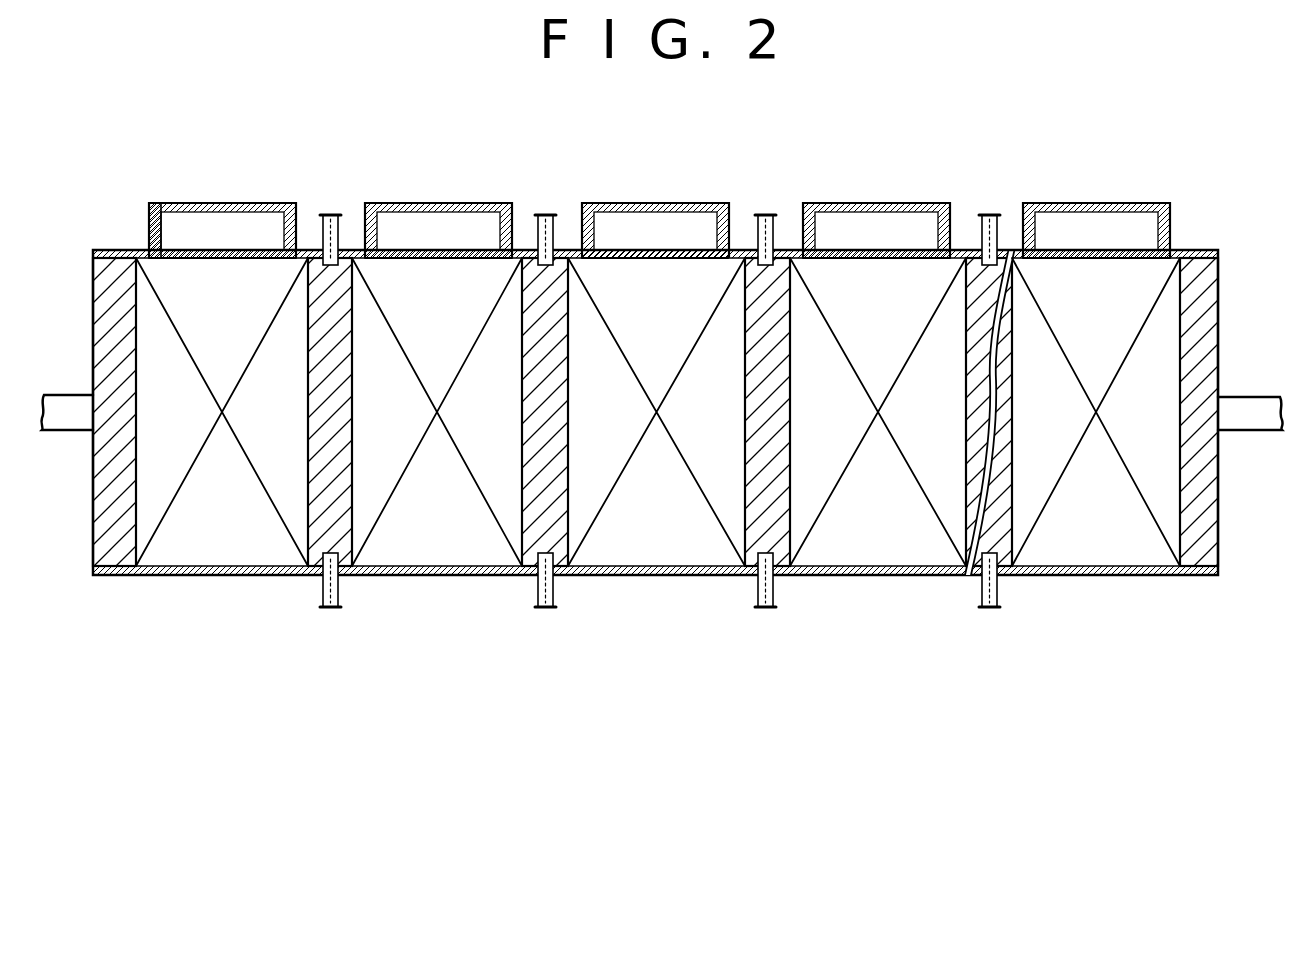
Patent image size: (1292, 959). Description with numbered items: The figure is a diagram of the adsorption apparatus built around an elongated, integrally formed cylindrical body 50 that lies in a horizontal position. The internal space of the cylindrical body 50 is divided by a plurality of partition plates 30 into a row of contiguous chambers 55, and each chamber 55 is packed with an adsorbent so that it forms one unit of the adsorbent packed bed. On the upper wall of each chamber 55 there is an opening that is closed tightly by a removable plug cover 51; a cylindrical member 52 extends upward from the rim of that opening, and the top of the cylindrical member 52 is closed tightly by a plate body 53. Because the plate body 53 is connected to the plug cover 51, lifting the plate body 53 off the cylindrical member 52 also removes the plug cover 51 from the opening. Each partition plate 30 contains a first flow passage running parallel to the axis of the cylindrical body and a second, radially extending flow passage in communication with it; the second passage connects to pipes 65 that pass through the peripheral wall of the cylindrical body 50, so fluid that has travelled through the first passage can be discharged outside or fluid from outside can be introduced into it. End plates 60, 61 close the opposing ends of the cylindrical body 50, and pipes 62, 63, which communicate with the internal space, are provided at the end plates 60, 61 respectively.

The partition plate 30 is at (303, 535).
The cylindrical body 50 is at (900, 577).
The plug cover 51 is at (204, 259).
The cylindrical member 52 is at (151, 228).
The plate body 53 is at (250, 206).
The chamber 55 is at (197, 537).
The end plate 60 is at (1200, 520).
The end plate 61 is at (105, 498).
The pipe 62 is at (1249, 397).
The pipe 63 is at (64, 396).
The pipe 65 is at (338, 236).